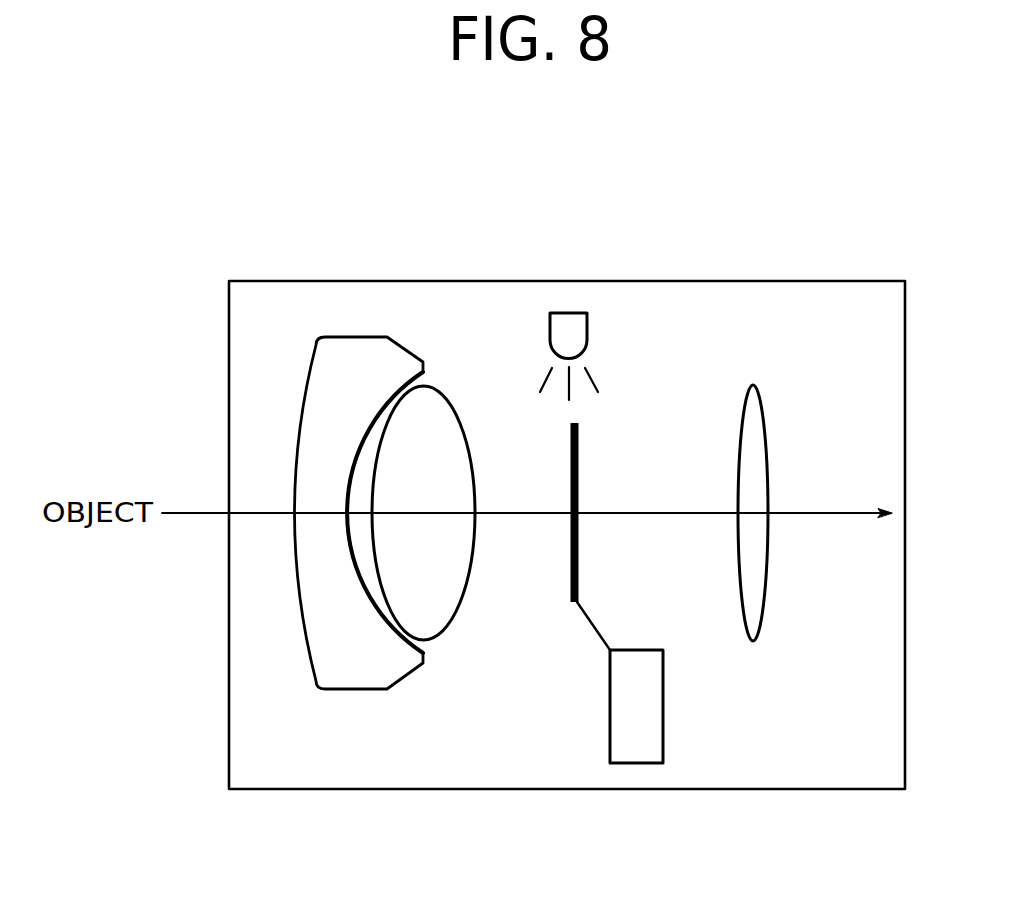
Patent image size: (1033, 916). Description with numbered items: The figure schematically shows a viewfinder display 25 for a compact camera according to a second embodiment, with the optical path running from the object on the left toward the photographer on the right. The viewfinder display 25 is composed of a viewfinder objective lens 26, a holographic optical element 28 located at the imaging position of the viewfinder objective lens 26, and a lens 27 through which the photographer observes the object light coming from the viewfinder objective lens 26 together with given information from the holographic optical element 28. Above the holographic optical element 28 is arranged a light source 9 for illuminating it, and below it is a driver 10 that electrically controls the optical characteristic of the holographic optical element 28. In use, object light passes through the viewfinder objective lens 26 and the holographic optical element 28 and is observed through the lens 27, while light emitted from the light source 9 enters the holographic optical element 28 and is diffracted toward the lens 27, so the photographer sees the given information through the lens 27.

The viewfinder display 25 is at (799, 259).
The viewfinder objective lens 26 is at (475, 326).
The light source 9 is at (568, 312).
The holographic optical element 28 is at (572, 578).
The driver 10 is at (637, 763).
The lens 27 is at (760, 632).